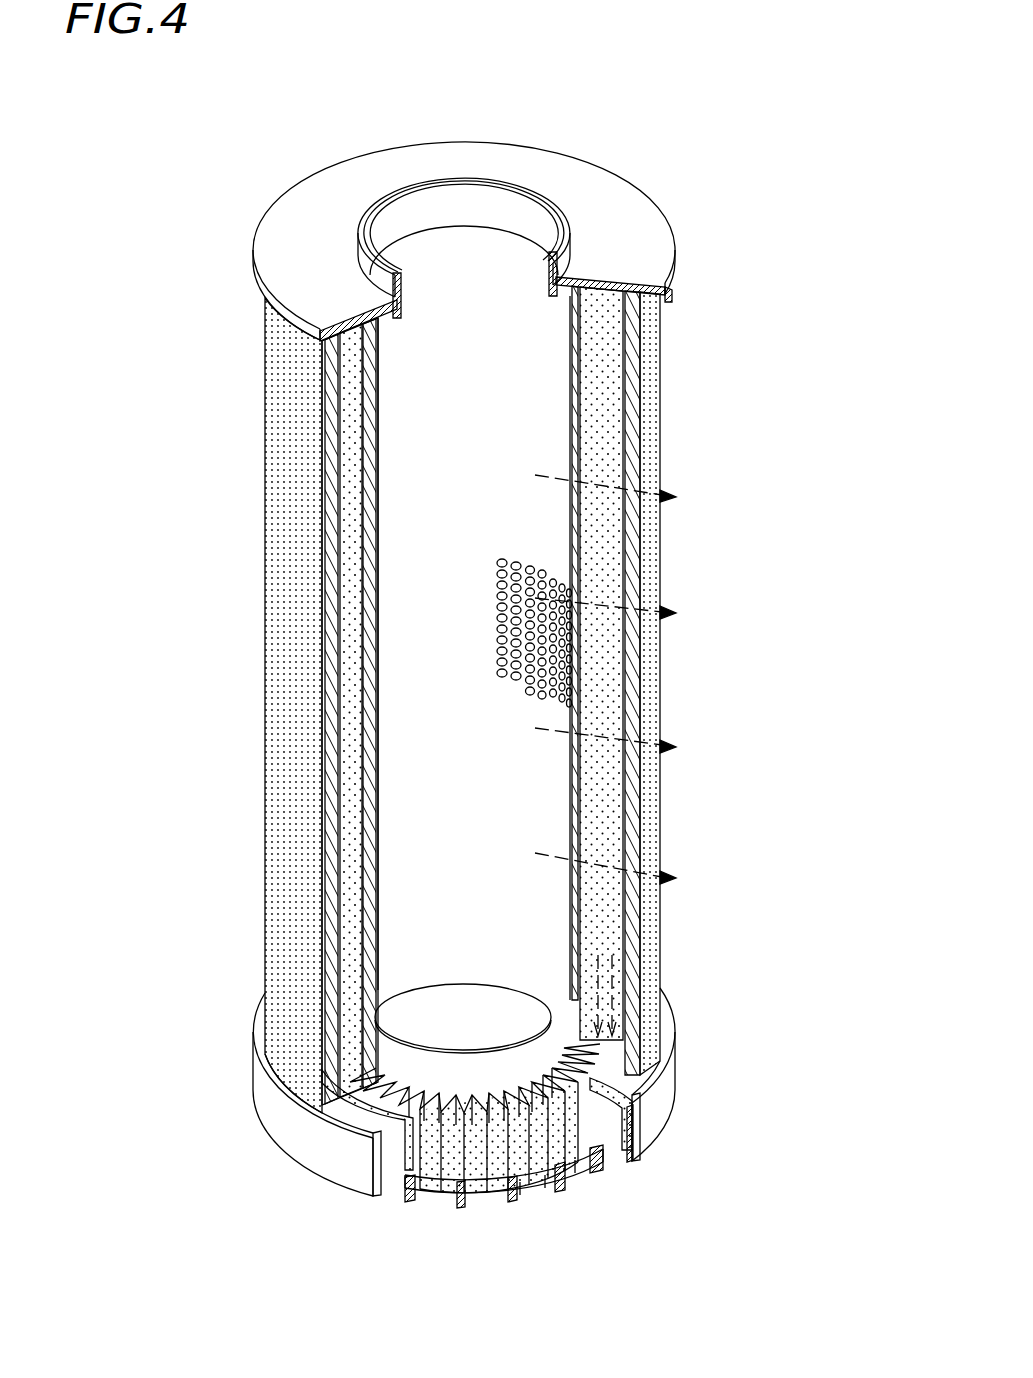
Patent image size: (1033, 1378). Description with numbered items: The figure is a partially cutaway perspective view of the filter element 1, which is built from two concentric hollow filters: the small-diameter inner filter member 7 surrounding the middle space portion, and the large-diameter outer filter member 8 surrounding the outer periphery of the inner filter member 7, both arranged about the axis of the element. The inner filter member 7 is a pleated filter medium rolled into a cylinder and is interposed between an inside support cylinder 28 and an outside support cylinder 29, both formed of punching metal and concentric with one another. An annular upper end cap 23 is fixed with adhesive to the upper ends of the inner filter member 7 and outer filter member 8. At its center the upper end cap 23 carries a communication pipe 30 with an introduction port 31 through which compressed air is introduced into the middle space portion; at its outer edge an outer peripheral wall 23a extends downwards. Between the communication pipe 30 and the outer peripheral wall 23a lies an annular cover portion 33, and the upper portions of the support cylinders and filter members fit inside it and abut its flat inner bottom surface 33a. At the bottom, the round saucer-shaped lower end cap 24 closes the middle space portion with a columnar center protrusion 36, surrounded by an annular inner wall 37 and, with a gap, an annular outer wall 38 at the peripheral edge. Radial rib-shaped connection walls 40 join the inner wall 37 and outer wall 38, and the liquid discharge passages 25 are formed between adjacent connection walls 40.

The filter element 1 is at (745, 425).
The inner filter member 7 is at (605, 527).
The outer filter member 8 is at (290, 605).
The upper end cap 23 is at (604, 155).
The outer peripheral wall 23a is at (668, 290).
The lower end cap 24 is at (250, 1147).
The liquid discharge passages 25 is at (578, 1172).
The inside support cylinder 28 is at (563, 650).
The outside support cylinder 29 is at (635, 803).
The communication pipe 30 is at (478, 178).
The introduction port 31 is at (425, 215).
The cover portion 33 is at (615, 205).
The inner bottom surface 33a is at (603, 292).
The center protrusion 36 is at (458, 992).
The inner wall 37 is at (437, 1185).
The outer wall 38 is at (325, 1160).
The connection walls 40 is at (508, 1195).